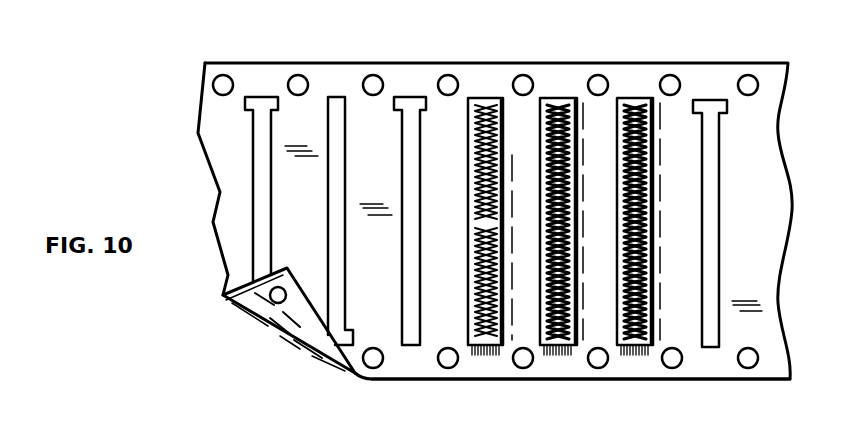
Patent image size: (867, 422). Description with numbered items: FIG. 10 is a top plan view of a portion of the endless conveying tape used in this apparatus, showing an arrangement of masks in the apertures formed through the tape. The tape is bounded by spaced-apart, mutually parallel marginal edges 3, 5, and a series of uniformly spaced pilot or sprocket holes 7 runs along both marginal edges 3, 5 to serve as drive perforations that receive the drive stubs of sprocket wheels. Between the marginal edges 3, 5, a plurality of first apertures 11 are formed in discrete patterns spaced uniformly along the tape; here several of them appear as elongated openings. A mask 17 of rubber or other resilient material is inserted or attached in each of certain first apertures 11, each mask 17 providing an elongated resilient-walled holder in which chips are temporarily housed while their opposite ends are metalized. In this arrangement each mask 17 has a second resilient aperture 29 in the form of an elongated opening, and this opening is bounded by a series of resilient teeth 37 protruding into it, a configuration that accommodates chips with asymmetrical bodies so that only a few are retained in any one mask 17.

The marginal edge 3 is at (285, 63).
The marginal edge 5 is at (548, 380).
The pilot or sprocket holes 7 is at (373, 84).
The first apertures 11 is at (260, 141).
The mask 17 is at (633, 98).
The second resilient apertures 29 is at (476, 212).
The resilient teeth 37 is at (477, 178).